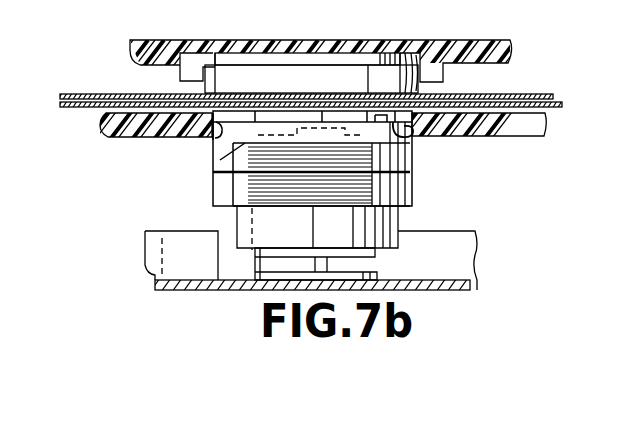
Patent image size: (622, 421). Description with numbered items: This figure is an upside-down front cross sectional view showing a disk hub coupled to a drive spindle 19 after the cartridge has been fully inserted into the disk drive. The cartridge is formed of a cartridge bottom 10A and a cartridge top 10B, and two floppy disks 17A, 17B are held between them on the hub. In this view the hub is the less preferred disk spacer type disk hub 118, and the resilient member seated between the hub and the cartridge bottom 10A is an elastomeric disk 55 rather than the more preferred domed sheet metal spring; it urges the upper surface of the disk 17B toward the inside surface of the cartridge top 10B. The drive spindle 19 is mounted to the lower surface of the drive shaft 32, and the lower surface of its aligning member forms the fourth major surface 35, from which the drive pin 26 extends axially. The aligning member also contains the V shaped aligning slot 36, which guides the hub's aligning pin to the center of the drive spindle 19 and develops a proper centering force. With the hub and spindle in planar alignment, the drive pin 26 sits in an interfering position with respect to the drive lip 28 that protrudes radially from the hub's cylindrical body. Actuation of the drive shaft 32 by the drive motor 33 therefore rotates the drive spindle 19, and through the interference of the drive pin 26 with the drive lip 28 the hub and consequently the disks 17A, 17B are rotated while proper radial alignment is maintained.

The cartridge bottom 10A is at (438, 42).
The cartridge top 10B is at (487, 138).
The floppy disk 17A is at (518, 93).
The floppy disk 17B is at (560, 107).
The disk spacer type disk hub 118 is at (292, 73).
The elastomeric disk 55 is at (247, 55).
The drive spindle 19 is at (216, 170).
The fourth major surface 35 is at (217, 115).
The drive lip 28 is at (412, 138).
The drive pin 26 is at (412, 152).
The drive shaft 32 is at (330, 261).
The drive motor 33 is at (541, 269).
The V shaped aligning slot 36 is at (430, 291).